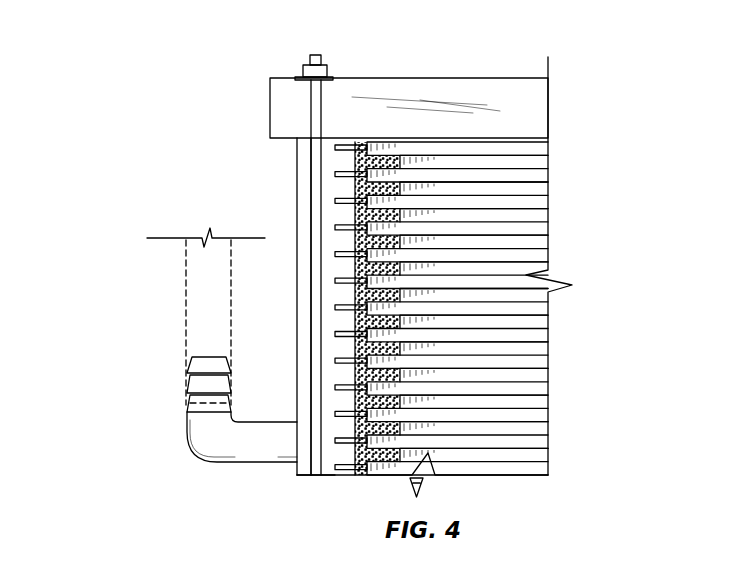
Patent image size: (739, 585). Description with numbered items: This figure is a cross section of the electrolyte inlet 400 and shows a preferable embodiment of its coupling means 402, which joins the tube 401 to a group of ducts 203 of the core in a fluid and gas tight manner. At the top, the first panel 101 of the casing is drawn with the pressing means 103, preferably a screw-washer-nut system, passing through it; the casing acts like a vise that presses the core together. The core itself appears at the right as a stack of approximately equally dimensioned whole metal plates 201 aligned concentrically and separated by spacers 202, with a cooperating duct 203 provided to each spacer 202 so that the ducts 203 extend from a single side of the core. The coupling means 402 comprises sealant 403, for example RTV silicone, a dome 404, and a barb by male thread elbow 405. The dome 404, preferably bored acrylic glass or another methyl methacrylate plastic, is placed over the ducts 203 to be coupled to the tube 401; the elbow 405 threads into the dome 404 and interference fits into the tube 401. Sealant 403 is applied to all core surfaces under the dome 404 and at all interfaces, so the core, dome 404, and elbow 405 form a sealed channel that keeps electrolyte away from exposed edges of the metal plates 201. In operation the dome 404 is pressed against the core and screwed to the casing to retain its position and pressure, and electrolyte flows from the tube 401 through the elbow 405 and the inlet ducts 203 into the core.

The electrolyte inlet 400 is at (140, 446).
The first panel 101 is at (541, 120).
The pressing means 103 is at (311, 63).
The metal plates 201 is at (535, 158).
The spacers 202 is at (535, 148).
The ducts 203 is at (339, 141).
The tube 401 is at (196, 297).
The coupling means 402 is at (298, 468).
The sealant 403 is at (385, 157).
The dome 404 is at (302, 178).
The barb by male thread elbow 405 is at (196, 432).